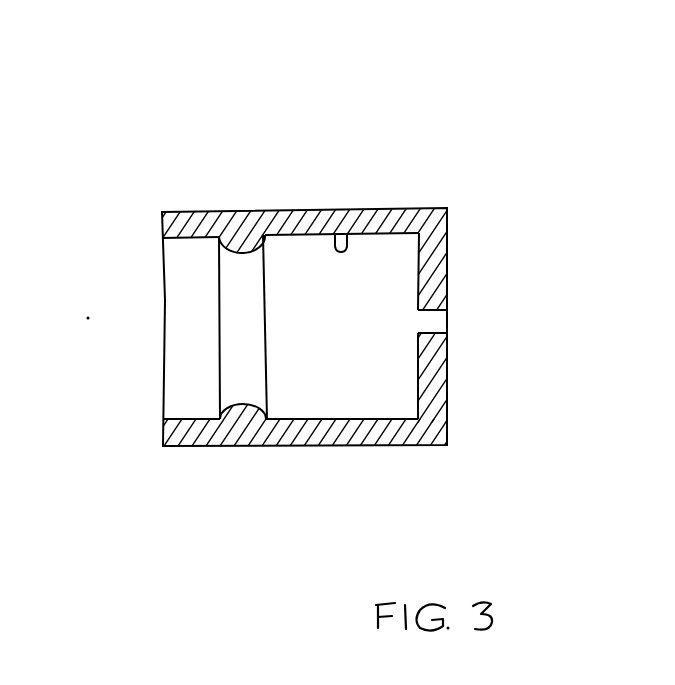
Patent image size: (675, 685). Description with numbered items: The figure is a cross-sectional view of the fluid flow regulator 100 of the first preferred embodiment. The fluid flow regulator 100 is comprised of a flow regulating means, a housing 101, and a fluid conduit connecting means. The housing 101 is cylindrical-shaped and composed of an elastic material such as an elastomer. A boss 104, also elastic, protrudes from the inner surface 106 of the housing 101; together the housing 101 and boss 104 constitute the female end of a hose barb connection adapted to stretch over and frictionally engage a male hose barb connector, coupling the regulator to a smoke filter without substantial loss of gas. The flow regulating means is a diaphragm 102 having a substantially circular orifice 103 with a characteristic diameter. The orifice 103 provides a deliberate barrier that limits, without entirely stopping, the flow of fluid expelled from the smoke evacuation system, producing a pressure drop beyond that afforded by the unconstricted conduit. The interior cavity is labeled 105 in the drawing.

The fluid flow regulator 100 is at (558, 12).
The housing 101 is at (313, 443).
The diaphragm 102 is at (440, 390).
The orifice 103 is at (435, 322).
The boss 104 is at (237, 335).
The interior cavity 105 is at (371, 311).
The inner surface 106 is at (347, 234).